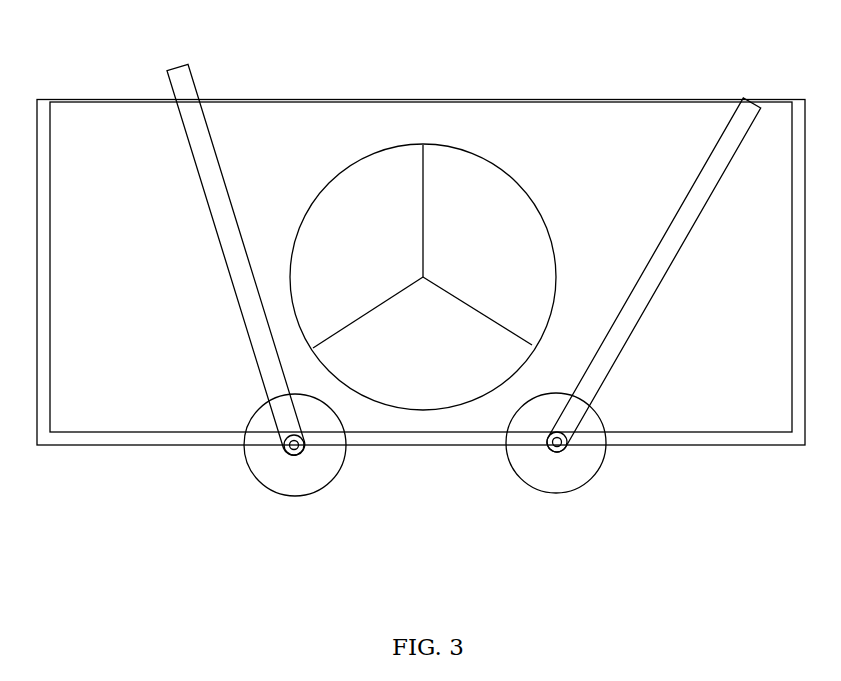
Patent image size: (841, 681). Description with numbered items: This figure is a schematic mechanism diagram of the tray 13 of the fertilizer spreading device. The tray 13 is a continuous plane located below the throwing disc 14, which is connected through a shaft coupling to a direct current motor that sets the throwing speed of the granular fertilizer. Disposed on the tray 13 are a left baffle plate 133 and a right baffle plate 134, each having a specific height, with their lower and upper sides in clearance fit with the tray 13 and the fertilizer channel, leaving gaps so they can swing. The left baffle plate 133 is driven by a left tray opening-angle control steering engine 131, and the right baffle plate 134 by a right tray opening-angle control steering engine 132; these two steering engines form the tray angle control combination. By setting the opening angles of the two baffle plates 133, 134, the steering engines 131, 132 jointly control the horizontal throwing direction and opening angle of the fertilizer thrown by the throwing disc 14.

The tray 13 is at (421, 346).
The throwing disc 14 is at (503, 215).
The left tray opening-angle control steering engine 131 is at (321, 493).
The right tray opening-angle control steering engine 132 is at (594, 492).
The left baffle plate 133 is at (227, 218).
The right baffle plate 134 is at (672, 248).